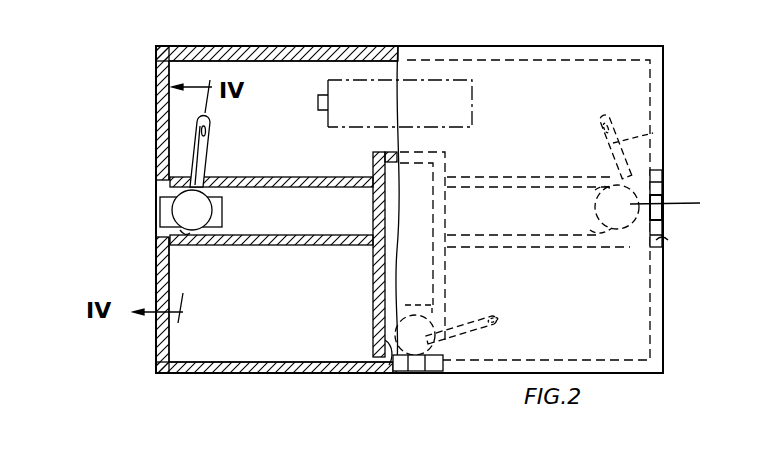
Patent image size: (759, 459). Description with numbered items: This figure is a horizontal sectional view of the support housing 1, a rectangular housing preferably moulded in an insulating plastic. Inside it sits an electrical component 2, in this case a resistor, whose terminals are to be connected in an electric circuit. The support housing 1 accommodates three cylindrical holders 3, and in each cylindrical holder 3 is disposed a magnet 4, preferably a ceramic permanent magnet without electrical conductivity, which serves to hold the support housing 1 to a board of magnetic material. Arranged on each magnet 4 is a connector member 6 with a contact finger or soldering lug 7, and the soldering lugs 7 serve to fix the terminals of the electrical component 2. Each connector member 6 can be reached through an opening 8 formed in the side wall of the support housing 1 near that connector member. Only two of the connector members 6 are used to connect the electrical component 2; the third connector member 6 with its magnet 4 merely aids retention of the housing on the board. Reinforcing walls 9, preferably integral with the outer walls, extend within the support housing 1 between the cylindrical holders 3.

The support housing 1 is at (605, 28).
The electrical component 2 is at (452, 80).
The cylindrical holder 3 is at (205, 242).
The magnet 4 is at (410, 345).
The connector member 6 is at (673, 209).
The soldering lug 7 is at (653, 134).
The opening 8 is at (663, 240).
The reinforcing wall 9 is at (533, 247).